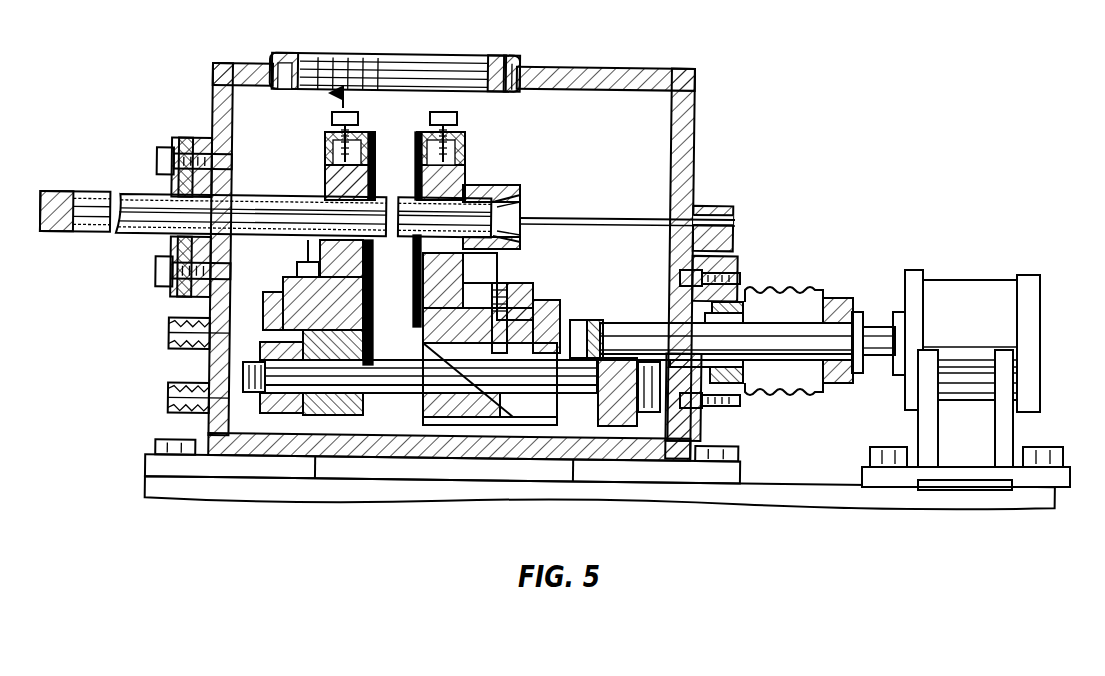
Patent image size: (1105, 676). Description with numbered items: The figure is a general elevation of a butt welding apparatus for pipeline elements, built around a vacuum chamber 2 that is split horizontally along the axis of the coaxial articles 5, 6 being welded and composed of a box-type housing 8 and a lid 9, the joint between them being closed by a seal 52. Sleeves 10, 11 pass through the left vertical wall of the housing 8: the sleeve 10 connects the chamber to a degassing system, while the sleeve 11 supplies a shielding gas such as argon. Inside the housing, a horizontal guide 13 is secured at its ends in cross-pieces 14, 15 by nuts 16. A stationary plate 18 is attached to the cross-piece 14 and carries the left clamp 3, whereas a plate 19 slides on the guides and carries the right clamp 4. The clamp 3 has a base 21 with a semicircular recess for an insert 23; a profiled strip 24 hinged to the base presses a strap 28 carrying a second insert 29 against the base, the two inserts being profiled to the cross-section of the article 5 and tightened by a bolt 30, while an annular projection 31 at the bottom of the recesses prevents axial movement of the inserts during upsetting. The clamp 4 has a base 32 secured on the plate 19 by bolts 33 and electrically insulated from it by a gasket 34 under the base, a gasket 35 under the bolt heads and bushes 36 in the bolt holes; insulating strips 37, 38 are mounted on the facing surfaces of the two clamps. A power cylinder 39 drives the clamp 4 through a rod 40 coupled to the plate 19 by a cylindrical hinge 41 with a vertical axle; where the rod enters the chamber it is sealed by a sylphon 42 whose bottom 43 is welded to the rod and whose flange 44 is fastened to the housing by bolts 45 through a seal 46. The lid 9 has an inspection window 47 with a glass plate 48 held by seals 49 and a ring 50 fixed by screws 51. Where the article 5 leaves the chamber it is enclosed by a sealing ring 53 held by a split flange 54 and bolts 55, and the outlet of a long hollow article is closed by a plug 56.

The vacuum chamber 2 is at (636, 66).
The clamp 3 is at (338, 159).
The clamp 4 is at (436, 156).
The article 5 is at (132, 205).
The article 6 is at (524, 214).
The housing 8 is at (468, 457).
The lid 9 is at (692, 98).
The sleeve 10 is at (171, 397).
The sleeve 11 is at (171, 333).
The guide 13 is at (406, 386).
The cross-piece 14 is at (268, 394).
The cross-piece 15 is at (618, 414).
The nut 16 is at (648, 402).
The plate 18 is at (324, 372).
The plate 19 is at (550, 400).
The base 21 is at (350, 292).
The insert 23 is at (373, 250).
The profiled strip 24 is at (376, 140).
The strap 28 is at (324, 160).
The insert 29 is at (324, 184).
The bolt 30 is at (331, 116).
The annular projection 31 is at (320, 264).
The base 32 is at (412, 300).
The bolt 33 is at (506, 352).
The gasket 34 is at (510, 290).
The gasket 35 is at (507, 342).
The bush 36 is at (536, 304).
The insulating strip 37 is at (376, 155).
The insulating strip 38 is at (414, 192).
The power cylinder 39 is at (990, 278).
The rod 40 is at (876, 328).
The cylindrical hinge 41 is at (582, 318).
The sylphon 42 is at (800, 290).
The bottom 43 is at (846, 386).
The flange 44 is at (742, 376).
The bolt 45 is at (735, 274).
The seal 46 is at (735, 400).
The window 47 is at (400, 52).
The glass plate 48 is at (352, 66).
The seal 49 is at (292, 86).
The ring 50 is at (500, 54).
The screw 51 is at (516, 54).
The seal 52 is at (684, 235).
The sealing ring 53 is at (220, 248).
The split flange 54 is at (184, 138).
The bolt 55 is at (160, 156).
The plug 56 is at (56, 193).